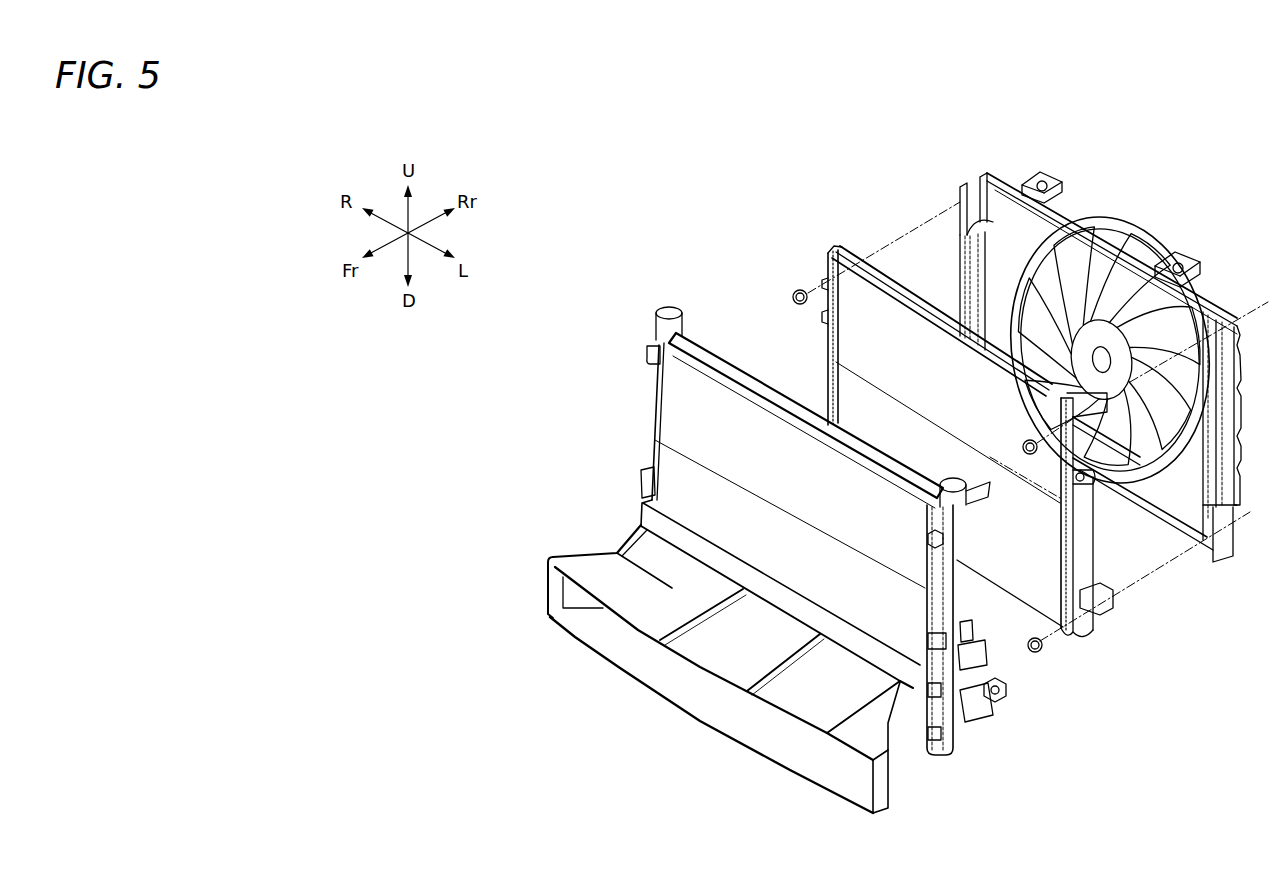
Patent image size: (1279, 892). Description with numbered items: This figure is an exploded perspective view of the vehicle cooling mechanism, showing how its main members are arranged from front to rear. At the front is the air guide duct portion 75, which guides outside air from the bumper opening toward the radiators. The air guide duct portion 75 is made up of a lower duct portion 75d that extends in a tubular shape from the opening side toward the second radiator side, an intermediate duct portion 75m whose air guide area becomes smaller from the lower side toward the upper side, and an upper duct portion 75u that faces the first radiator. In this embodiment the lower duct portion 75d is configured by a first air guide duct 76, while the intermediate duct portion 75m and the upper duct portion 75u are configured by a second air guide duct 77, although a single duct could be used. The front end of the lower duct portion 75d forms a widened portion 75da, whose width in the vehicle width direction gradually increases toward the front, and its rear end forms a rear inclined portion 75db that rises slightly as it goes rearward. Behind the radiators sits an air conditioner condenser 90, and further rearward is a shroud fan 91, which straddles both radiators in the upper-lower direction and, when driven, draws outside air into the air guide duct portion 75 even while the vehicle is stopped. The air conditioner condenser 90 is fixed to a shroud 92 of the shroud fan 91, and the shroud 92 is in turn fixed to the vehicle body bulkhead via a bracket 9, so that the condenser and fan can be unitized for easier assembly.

The bracket 9 is at (1050, 180).
The air guide duct portion 75 is at (621, 517).
The upper duct portion 75u is at (678, 410).
The intermediate duct portion 75m is at (667, 463).
The lower duct portion 75d is at (726, 656).
The widened portion 75da is at (573, 597).
The rear inclined portion 75db is at (920, 748).
The first air guide duct 76 is at (726, 656).
The second air guide duct 77 is at (611, 409).
The air conditioner condenser 90 is at (873, 300).
The shroud fan 91 is at (1010, 158).
The shroud 92 is at (1050, 215).